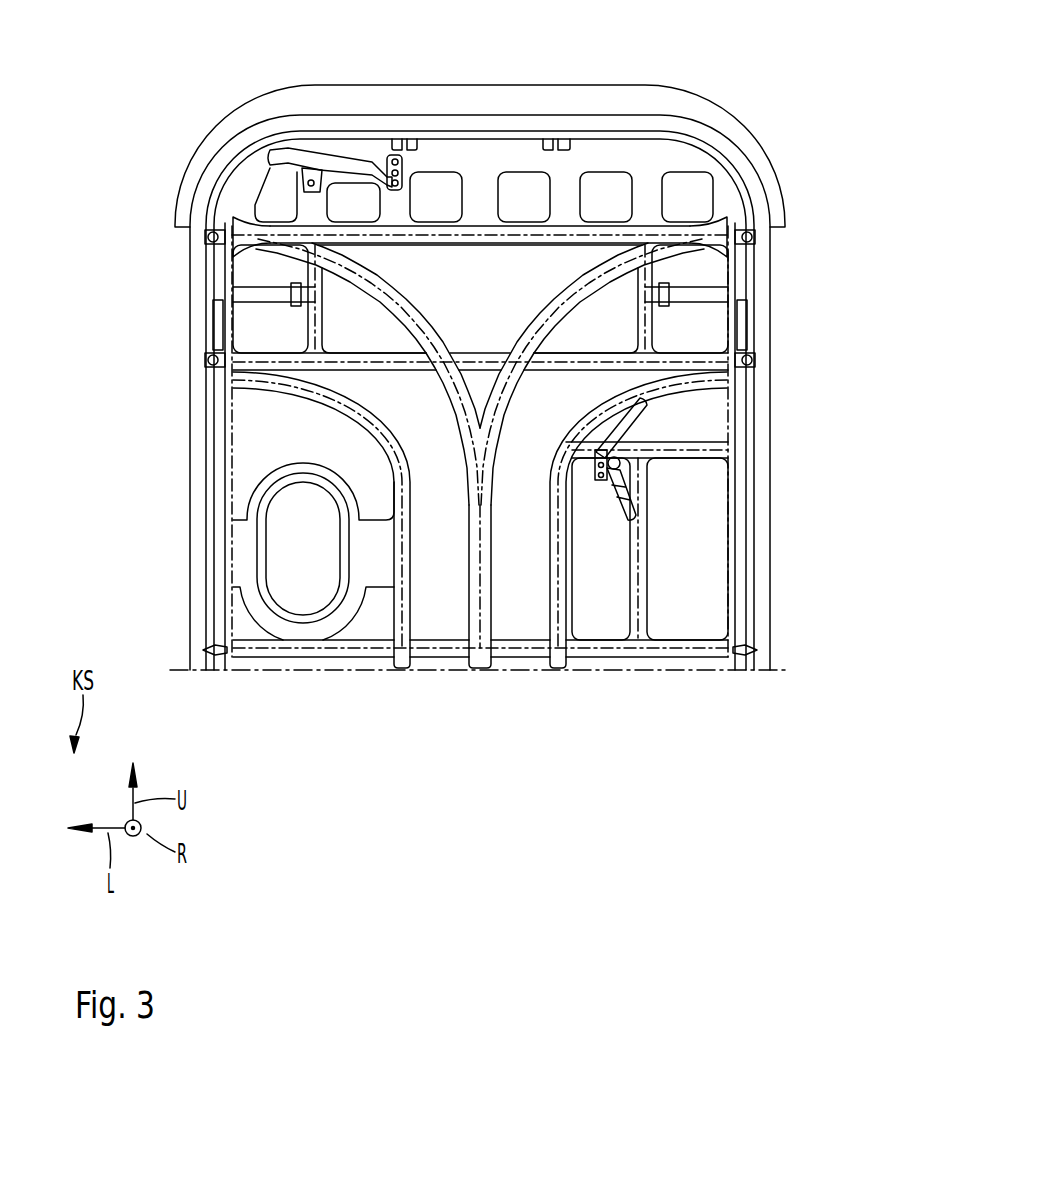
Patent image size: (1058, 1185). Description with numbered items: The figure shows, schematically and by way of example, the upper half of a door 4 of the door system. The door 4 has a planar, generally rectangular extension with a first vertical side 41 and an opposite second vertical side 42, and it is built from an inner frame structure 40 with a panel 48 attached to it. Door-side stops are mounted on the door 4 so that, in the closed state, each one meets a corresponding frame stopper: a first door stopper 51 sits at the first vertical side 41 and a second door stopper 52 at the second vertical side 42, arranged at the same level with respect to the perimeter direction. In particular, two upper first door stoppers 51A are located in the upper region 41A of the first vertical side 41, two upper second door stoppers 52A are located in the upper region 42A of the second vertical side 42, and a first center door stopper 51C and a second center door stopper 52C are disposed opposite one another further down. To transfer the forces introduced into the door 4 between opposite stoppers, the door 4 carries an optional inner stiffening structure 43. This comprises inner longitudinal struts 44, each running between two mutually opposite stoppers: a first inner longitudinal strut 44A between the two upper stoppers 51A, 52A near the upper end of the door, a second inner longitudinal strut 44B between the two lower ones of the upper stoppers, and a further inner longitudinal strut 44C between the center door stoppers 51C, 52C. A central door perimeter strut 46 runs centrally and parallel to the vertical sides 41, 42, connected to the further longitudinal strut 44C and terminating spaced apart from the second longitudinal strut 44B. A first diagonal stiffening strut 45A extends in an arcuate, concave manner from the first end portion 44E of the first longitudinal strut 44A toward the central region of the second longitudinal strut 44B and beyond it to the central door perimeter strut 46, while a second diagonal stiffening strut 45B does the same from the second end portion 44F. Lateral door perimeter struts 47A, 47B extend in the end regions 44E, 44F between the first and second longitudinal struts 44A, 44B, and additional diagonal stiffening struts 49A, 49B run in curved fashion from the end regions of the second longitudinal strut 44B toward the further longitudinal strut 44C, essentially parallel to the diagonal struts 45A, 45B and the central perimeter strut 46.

The door 4 is at (797, 276).
The inner frame structure 40 is at (202, 447).
The first vertical side 41 is at (800, 438).
The upper region of the first vertical side 41A is at (800, 311).
The second vertical side 42 is at (198, 508).
The upper region of the second vertical side 42A is at (158, 298).
The inner stiffening structure 43 is at (401, 203).
The inner longitudinal strut 44 is at (501, 380).
The first inner longitudinal strut 44A is at (481, 236).
The second inner longitudinal strut 44B is at (480, 355).
The further inner longitudinal strut 44C is at (360, 657).
The first end portion of the first inner longitudinal strut 44E is at (690, 235).
The second end portion of the first inner longitudinal strut 44F is at (278, 232).
The first diagonal stiffening strut 45A is at (574, 281).
The second diagonal stiffening strut 45B is at (386, 281).
The central door perimeter strut 46 is at (492, 583).
The lateral door perimeter strut 47A is at (643, 321).
The lateral door perimeter strut 47B is at (317, 321).
The panel 48 is at (643, 78).
The additional diagonal stiffening strut 49A is at (558, 436).
The additional diagonal stiffening strut 49B is at (352, 393).
The first door stopper 51 is at (806, 444).
The upper first door stopper 51A is at (755, 237).
The first center door stopper 51C is at (757, 650).
The second door stopper 52 is at (169, 479).
The upper second door stopper 52A is at (205, 237).
The second center door stopper 52C is at (210, 658).